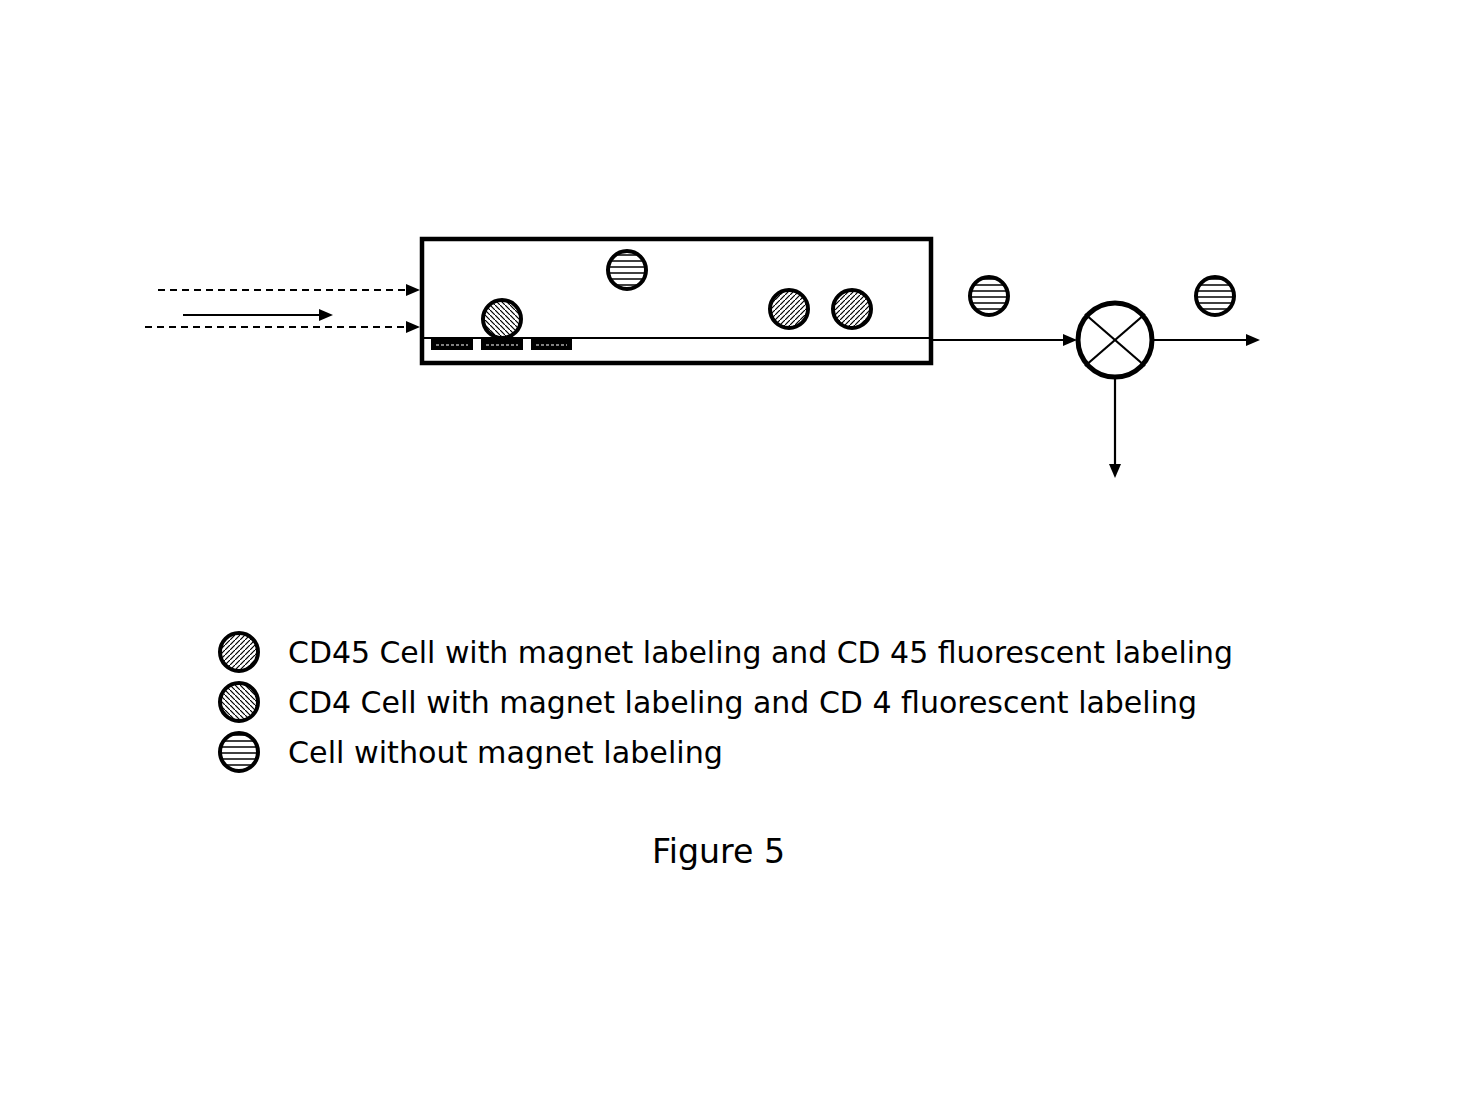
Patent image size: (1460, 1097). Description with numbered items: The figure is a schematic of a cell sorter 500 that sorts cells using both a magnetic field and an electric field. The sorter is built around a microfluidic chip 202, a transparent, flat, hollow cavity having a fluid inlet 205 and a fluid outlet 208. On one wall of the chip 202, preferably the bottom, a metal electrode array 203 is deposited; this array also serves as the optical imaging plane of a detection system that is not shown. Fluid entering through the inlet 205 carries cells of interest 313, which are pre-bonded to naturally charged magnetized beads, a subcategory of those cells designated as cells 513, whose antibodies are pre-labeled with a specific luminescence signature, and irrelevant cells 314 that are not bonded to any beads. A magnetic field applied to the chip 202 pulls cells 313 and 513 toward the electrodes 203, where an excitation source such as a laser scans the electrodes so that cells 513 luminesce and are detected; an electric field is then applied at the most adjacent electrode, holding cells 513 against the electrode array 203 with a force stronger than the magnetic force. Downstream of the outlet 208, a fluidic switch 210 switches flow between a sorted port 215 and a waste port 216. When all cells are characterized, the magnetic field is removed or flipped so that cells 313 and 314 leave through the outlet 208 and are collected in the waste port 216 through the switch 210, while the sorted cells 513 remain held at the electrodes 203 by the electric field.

The cell sorting system 500 is at (300, 135).
The fluid inlet 205 is at (260, 338).
The microfluidic chip 202 is at (725, 370).
The metal electrode array 203 is at (559, 351).
The subcategory cells of interest 513 is at (557, 277).
The irrelevant cells 314 is at (657, 265).
The cells of interest 313 is at (895, 315).
The fluid outlet 208 is at (1033, 341).
The fluidic switch 210 is at (1158, 292).
The waste port 216 is at (1218, 352).
The sorted port 215 is at (1120, 402).